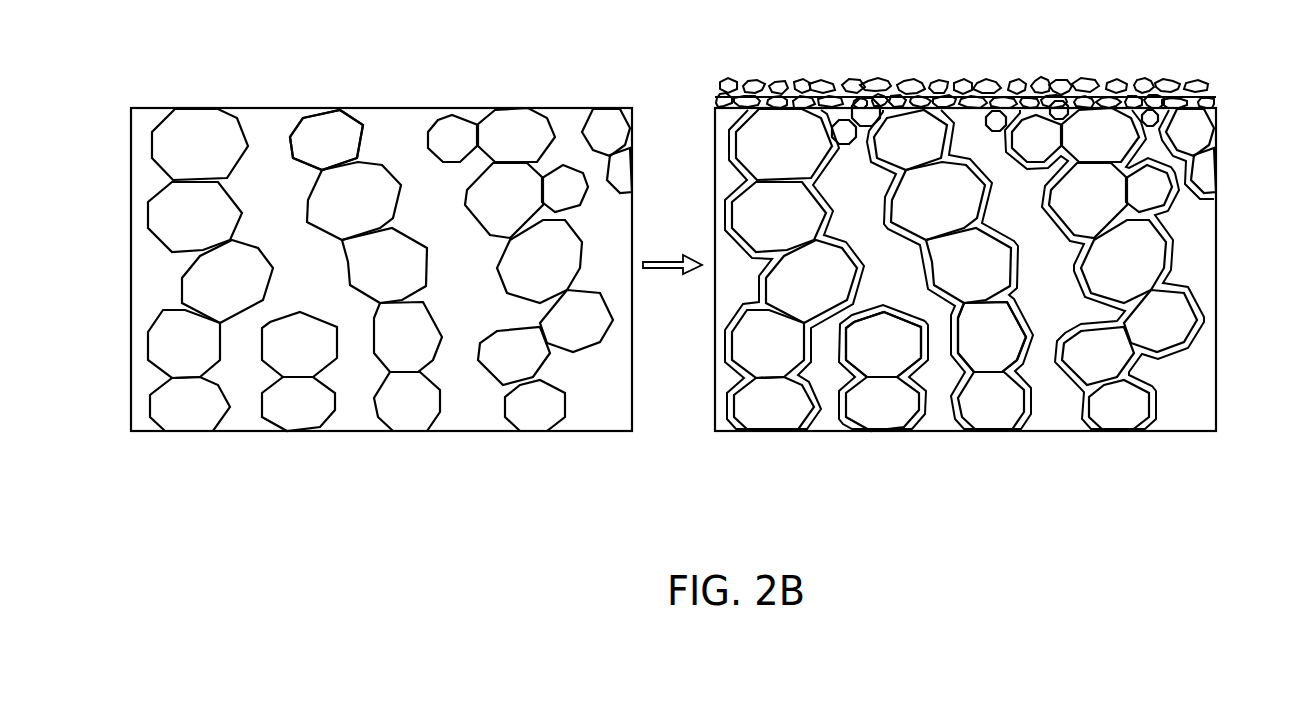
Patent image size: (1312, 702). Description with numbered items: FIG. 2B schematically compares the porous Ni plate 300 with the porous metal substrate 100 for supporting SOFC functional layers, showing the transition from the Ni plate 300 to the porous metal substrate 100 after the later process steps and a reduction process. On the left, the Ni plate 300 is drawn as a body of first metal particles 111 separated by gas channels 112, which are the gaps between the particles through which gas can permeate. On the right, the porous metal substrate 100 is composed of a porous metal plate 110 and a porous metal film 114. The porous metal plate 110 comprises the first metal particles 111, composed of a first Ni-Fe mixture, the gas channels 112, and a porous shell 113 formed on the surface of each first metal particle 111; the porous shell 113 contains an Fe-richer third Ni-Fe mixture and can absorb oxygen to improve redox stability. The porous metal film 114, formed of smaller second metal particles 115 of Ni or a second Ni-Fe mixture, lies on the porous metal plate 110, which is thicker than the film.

The Ni plate 300 is at (110, 197).
The porous metal substrate 100 is at (1010, 294).
The porous metal plate 110 is at (1203, 422).
The first metal particles 111 is at (496, 370).
The gas channels 112 is at (393, 132).
The porous shell 113 is at (719, 117).
The porous metal film 114 is at (1217, 94).
The second metal particles 115 is at (1093, 79).